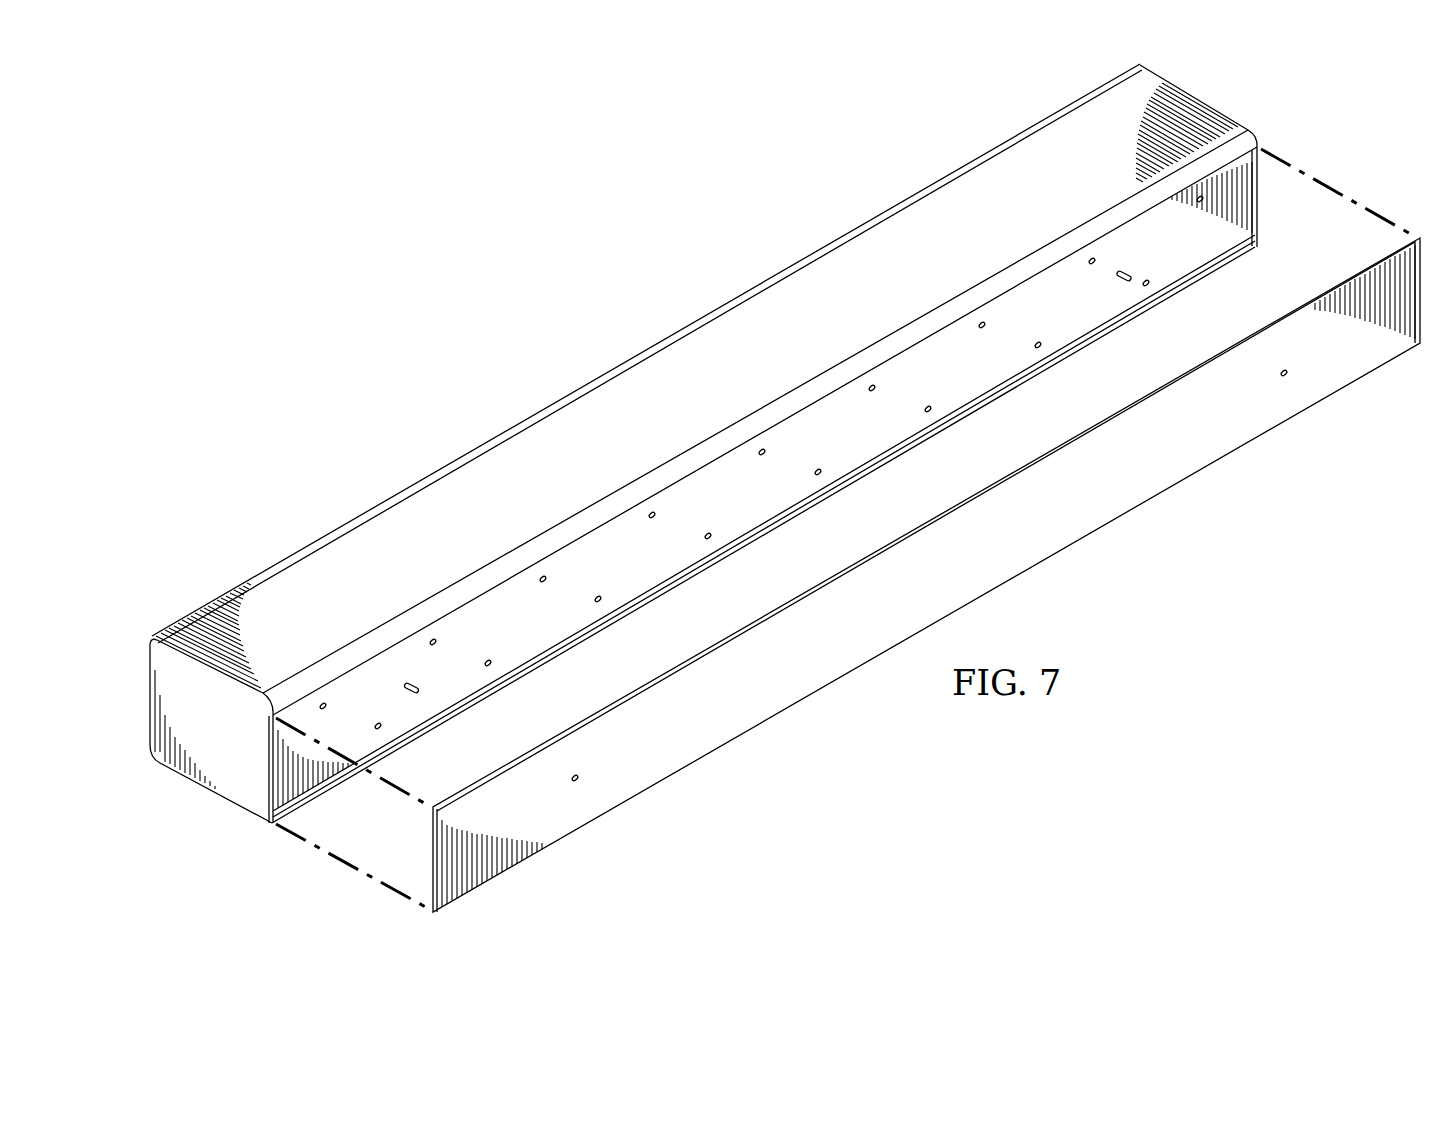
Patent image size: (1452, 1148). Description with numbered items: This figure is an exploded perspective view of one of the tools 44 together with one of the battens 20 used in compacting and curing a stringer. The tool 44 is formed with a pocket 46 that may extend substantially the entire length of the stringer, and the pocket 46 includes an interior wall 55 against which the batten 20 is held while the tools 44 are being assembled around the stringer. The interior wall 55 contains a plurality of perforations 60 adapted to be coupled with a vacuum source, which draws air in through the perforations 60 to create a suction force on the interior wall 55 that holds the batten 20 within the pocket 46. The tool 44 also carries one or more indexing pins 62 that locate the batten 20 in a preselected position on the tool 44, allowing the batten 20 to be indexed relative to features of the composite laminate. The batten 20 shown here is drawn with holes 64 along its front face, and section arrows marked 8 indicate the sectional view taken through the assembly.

The batten 20 is at (1092, 532).
The tool 44 is at (622, 316).
The pocket 46 is at (462, 690).
The interior wall 55 is at (698, 490).
The perforations 60 is at (545, 579).
The indexing pin 62 is at (416, 683).
The apertures 64 is at (578, 778).
The section line 8- 8 is at (1127, 385).